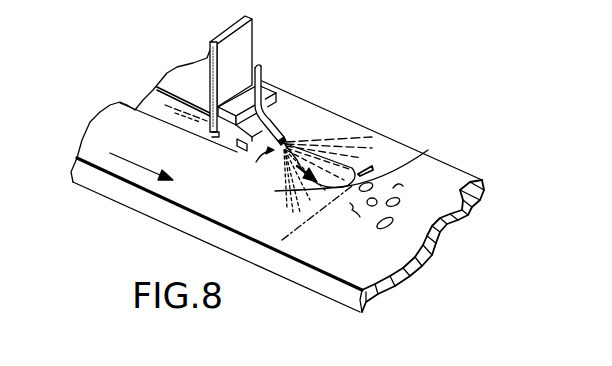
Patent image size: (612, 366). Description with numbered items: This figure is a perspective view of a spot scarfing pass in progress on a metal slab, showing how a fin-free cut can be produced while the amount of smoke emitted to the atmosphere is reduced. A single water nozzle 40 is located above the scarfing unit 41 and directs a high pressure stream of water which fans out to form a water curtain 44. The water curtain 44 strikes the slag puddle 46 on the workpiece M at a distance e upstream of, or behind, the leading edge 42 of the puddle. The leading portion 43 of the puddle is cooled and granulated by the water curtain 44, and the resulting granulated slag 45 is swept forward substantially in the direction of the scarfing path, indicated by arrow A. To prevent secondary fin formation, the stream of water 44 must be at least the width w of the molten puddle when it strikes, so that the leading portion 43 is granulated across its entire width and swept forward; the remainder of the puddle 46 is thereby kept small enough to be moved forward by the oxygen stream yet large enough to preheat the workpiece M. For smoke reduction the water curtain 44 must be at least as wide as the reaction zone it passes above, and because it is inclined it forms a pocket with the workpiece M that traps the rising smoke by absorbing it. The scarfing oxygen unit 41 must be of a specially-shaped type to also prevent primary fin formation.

The water nozzle 40 is at (272, 118).
The scarfing unit 41 is at (248, 140).
The leading edge of the puddle 42 is at (364, 160).
The leading portion of the puddle 43 is at (349, 183).
The water curtain 44 is at (300, 147).
The granulated slag 45 is at (383, 222).
The slag puddle 46 is at (300, 175).
The arrow indicating direction of scarfing path A is at (128, 161).
The workpiece M is at (330, 290).
The width of the molten puddle w is at (258, 164).
The distance upstream of the leading edge e is at (300, 223).